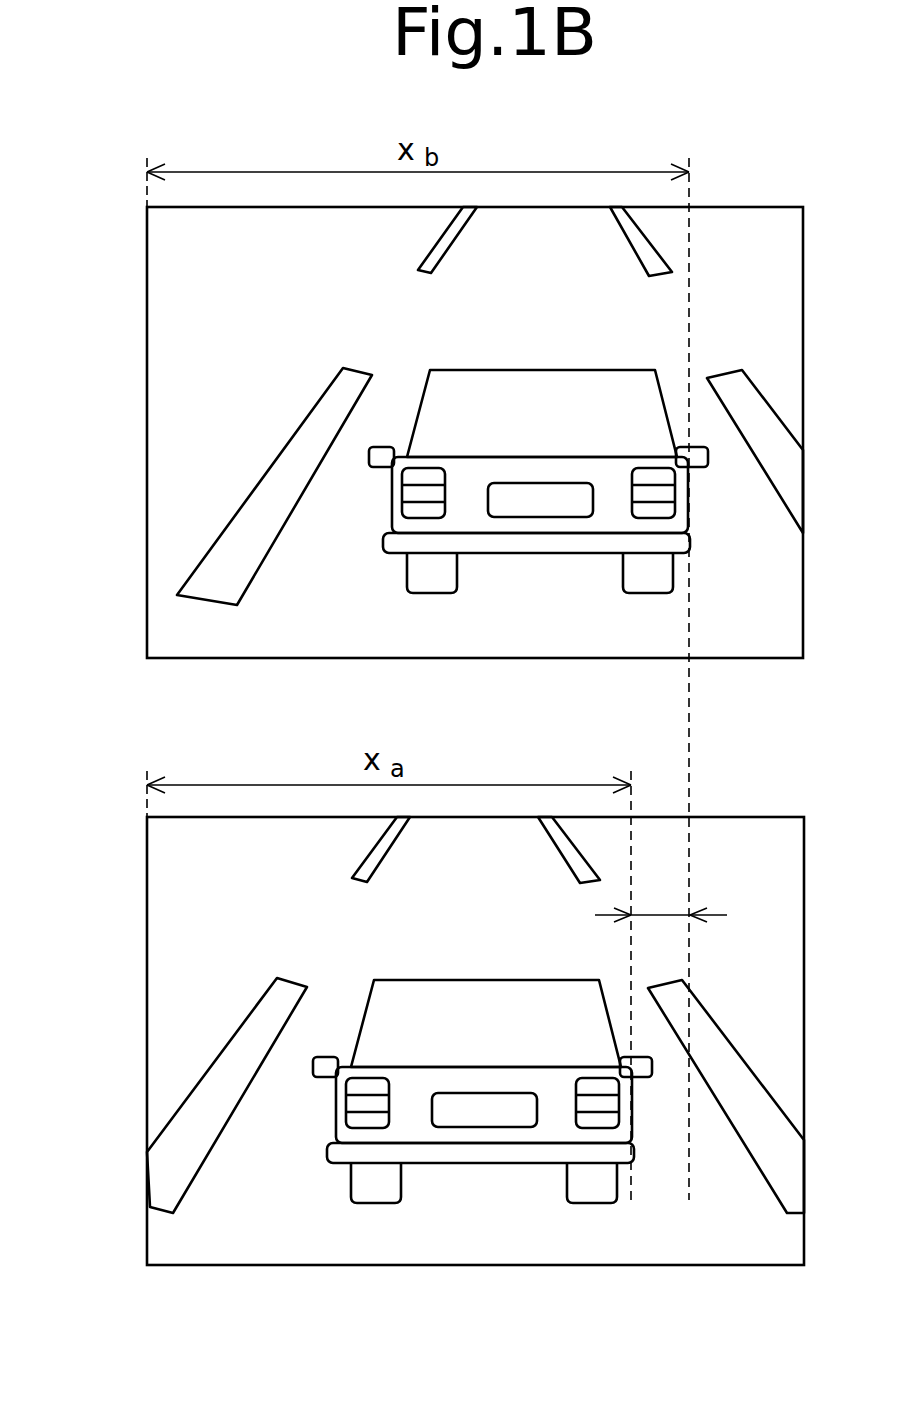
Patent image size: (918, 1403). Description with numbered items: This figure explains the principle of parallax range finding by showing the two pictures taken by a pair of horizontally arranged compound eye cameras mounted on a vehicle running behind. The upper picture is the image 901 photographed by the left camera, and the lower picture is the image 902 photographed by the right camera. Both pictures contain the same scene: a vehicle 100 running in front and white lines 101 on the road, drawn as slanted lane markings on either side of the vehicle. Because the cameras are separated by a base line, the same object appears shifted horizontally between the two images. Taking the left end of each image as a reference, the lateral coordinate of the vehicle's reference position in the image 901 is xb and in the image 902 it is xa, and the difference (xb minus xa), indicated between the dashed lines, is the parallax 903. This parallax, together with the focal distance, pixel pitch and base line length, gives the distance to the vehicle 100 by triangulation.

The vehicle running in front 100 is at (508, 370).
The white line on a road 101 is at (435, 244).
The image photographed by the left camera 901 is at (147, 413).
The image photographed by the right camera 902 is at (147, 1045).
The parallax 903 is at (655, 915).